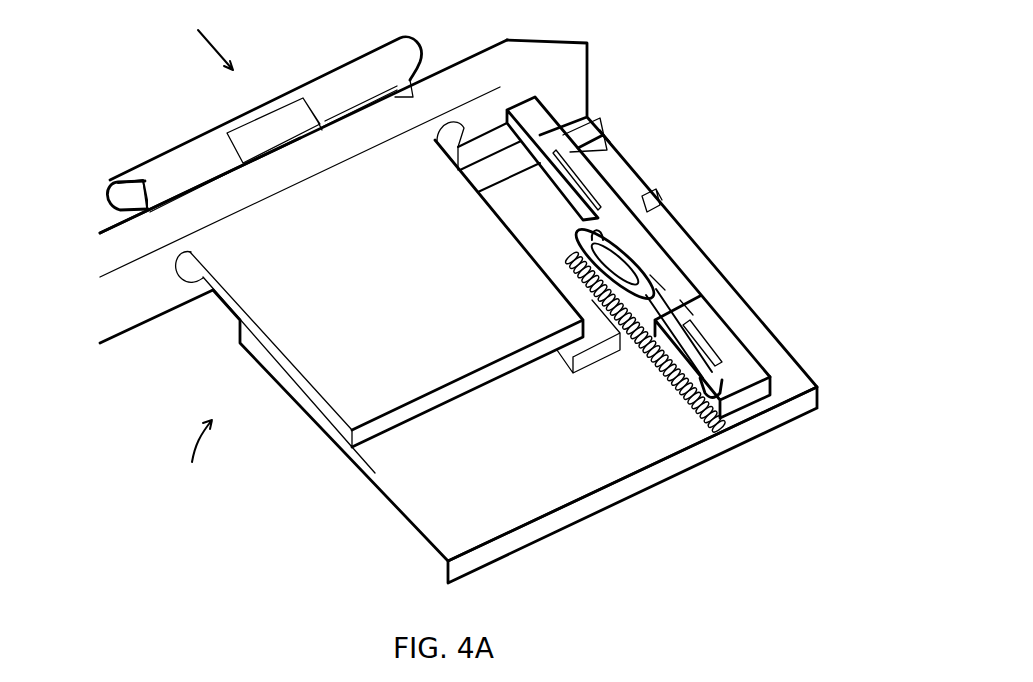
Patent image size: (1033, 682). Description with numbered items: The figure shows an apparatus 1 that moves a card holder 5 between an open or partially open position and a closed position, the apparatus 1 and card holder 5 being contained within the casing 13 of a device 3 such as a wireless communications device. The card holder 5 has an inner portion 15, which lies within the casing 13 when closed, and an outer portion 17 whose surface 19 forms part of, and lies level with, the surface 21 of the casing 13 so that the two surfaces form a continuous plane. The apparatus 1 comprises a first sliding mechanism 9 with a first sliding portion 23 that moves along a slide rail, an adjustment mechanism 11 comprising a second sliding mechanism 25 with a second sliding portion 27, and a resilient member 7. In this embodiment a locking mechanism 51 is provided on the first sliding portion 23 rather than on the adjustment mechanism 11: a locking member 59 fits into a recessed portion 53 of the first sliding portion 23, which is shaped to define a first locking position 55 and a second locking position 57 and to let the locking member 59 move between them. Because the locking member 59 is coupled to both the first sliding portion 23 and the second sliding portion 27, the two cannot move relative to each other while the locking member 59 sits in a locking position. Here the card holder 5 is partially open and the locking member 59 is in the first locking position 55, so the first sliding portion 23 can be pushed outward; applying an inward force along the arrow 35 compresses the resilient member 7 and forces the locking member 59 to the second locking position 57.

The apparatus 1 is at (608, 142).
The device 3 is at (197, 458).
The card holder 5 is at (106, 190).
The resilient member 7 is at (688, 402).
The first sliding mechanism 9 is at (660, 283).
The adjustment mechanism 11 is at (760, 376).
The casing 13 is at (112, 323).
The inner portion 15 is at (343, 412).
The outer portion 17 is at (130, 177).
The surface 19 is at (202, 130).
The surface 21 is at (105, 232).
The first sliding portion 23 is at (657, 207).
The second sliding mechanism 25 is at (563, 140).
The second sliding portion 27 is at (593, 183).
The arrow 35 is at (216, 40).
The locking mechanism 51 is at (700, 333).
The recessed portion 53 is at (693, 243).
The first locking position 55 is at (690, 335).
The second locking position 57 is at (603, 237).
The locking member 59 is at (707, 357).